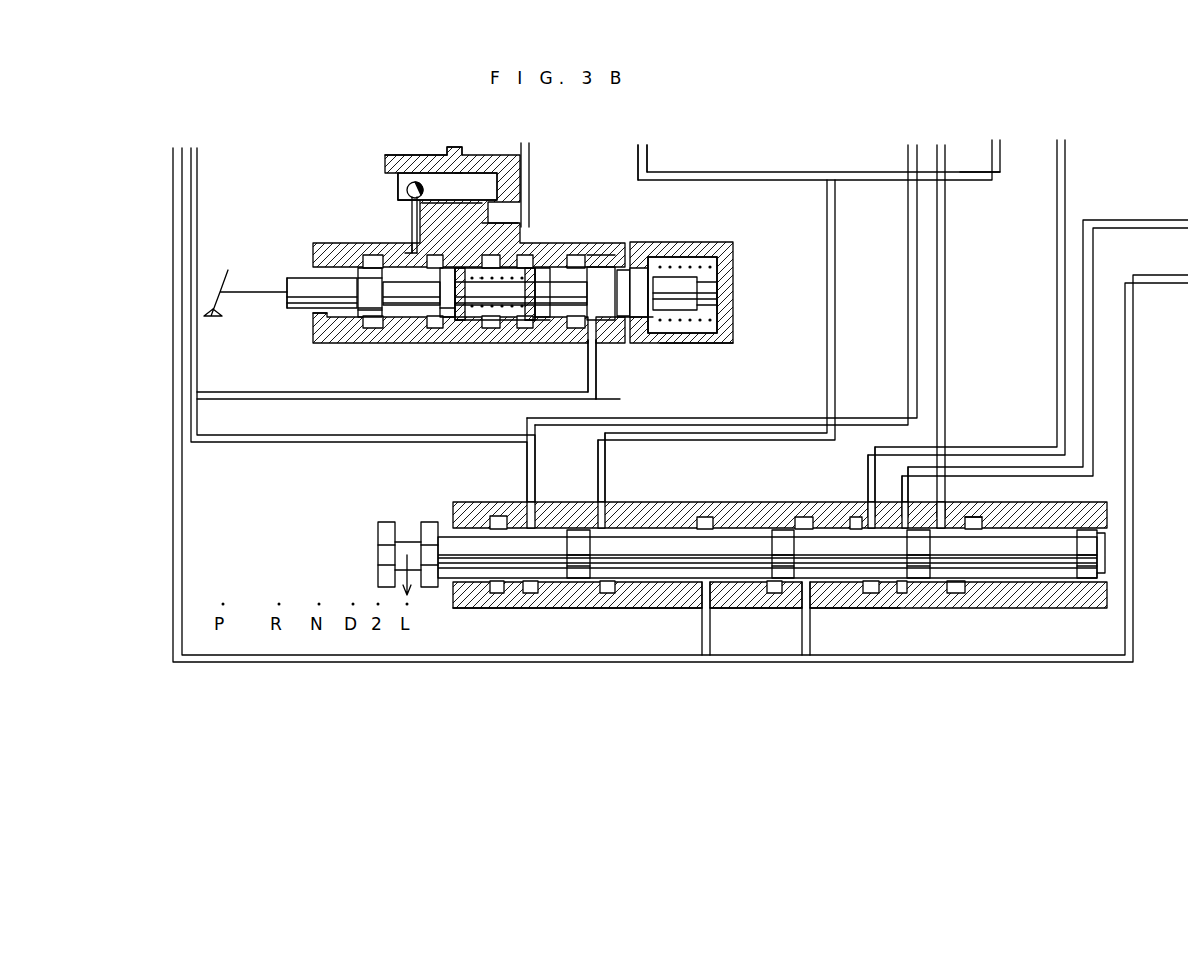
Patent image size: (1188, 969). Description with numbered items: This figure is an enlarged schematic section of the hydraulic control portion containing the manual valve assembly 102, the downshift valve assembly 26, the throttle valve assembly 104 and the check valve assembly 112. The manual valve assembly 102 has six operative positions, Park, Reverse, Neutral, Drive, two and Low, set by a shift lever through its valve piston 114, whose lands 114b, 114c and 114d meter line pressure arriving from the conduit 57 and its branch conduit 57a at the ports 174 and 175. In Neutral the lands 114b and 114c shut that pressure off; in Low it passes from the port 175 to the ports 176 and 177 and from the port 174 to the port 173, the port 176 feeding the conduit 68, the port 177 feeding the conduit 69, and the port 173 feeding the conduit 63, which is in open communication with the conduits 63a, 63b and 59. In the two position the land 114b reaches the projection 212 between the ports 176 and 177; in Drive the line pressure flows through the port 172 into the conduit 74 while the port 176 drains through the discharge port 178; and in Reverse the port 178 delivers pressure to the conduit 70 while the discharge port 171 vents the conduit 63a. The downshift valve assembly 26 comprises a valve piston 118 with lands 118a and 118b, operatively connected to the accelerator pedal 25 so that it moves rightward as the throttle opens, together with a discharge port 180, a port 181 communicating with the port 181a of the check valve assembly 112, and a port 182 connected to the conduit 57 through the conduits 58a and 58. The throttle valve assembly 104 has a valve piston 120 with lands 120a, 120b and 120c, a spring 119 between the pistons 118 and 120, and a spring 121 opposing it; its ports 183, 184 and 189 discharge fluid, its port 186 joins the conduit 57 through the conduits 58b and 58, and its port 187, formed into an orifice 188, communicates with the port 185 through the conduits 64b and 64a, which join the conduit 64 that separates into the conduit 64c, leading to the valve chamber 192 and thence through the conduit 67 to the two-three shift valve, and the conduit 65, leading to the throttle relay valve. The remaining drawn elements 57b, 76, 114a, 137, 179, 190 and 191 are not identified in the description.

The accelerator pedal 25 is at (222, 285).
The downshift valve assembly 26 is at (290, 262).
The conduit 57 is at (173, 178).
The conduit 57a is at (702, 655).
The passage wall 57b is at (810, 655).
The conduit 58 is at (254, 399).
The conduit 58a is at (455, 399).
The conduit 58b is at (600, 399).
The conduit 59 is at (199, 183).
The conduit 63 is at (835, 290).
The conduit 63a is at (806, 180).
The conduit 63b is at (980, 180).
The conduit 64 is at (545, 220).
The conduit 64a is at (575, 255).
The conduit 64b is at (624, 268).
The conduit 64c is at (488, 218).
The conduit 65 is at (529, 143).
The conduit 67 is at (455, 147).
The conduit 68 is at (1057, 348).
The conduit 69 is at (1083, 410).
The conduit 70 is at (945, 298).
The conduit 74 is at (748, 418).
The passage 76 is at (410, 245).
The manual valve assembly 102 is at (361, 524).
The throttle valve assembly 104 is at (715, 203).
The check valve assembly 112 is at (385, 155).
The valve piston 114 is at (462, 570).
The spool land 114a is at (1087, 580).
The land 114b is at (918, 580).
The land 114c is at (783, 532).
The land 114d is at (580, 580).
The valve piston 118 is at (287, 305).
The land 118a is at (330, 330).
The land 118b is at (440, 330).
The spring 119 is at (492, 310).
The valve piston 120 is at (715, 293).
The land 120a is at (602, 268).
The land 120b is at (680, 275).
The land 120c is at (547, 325).
The spring 121 is at (717, 272).
The ball check valve 137 is at (407, 188).
The discharge port 171 is at (500, 604).
The port 172 is at (540, 515).
The port 173 is at (603, 515).
The port 174 is at (690, 598).
The port 175 is at (802, 598).
The port 176 is at (865, 515).
The port 177 is at (915, 512).
The discharge port 178 is at (955, 515).
The port 179 is at (970, 595).
The port 180 is at (376, 330).
The port 181 is at (370, 265).
The port 181a is at (412, 205).
The port 182 is at (448, 332).
The port 183 is at (462, 335).
The port 184 is at (540, 330).
The port 185 is at (552, 258).
The port 186 is at (598, 335).
The port 187 is at (660, 262).
The orifice 188 is at (642, 272).
The port 189 is at (668, 337).
The spring 190 is at (717, 312).
The port 191 is at (635, 335).
The valve chamber 192 is at (445, 178).
The projection 212 is at (890, 593).